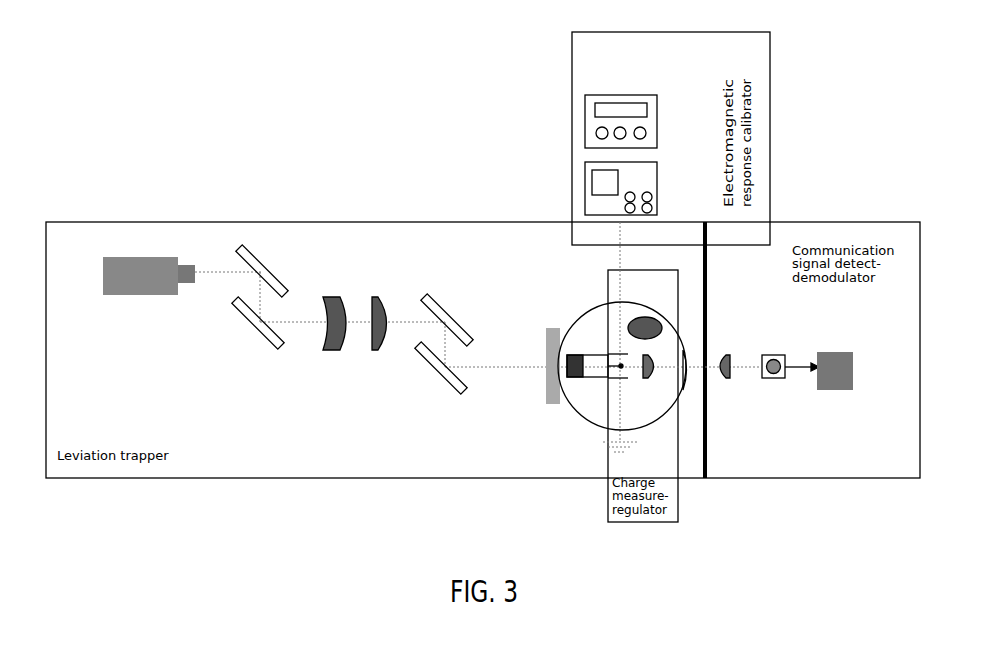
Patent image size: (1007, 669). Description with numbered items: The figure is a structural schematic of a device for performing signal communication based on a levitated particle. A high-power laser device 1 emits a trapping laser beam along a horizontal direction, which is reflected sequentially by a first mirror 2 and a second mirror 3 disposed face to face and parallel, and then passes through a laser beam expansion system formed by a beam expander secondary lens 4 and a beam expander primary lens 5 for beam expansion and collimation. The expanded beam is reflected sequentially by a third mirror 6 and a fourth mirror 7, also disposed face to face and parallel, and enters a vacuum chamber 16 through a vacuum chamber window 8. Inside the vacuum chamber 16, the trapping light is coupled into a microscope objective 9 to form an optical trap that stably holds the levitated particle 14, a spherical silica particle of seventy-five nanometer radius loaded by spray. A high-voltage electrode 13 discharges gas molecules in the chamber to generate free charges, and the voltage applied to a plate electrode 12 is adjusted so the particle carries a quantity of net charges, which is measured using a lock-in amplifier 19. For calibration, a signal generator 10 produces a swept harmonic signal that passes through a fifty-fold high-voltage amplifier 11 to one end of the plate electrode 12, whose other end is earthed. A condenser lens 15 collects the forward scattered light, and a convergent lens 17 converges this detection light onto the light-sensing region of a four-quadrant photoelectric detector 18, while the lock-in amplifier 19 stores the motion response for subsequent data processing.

The laser device 1 is at (131, 296).
The first mirror 2 is at (266, 268).
The second mirror 3 is at (240, 318).
The beam expander secondary lens 4 is at (335, 348).
The beam expander primary lens 5 is at (380, 348).
The third mirror 6 is at (440, 302).
The fourth mirror 7 is at (428, 370).
The vacuum chamber window 8 is at (547, 403).
The microscope objective 9 is at (588, 383).
The signal generator 10 is at (628, 95).
The high-voltage amplifier 11 is at (655, 178).
The plate electrode 12 is at (608, 354).
The high-voltage electrode 13 is at (620, 366).
The levitated particle 14 is at (684, 353).
The condenser lens 15 is at (658, 377).
The vacuum chamber 16 is at (684, 353).
The convergent lens 17 is at (725, 356).
The four-quadrant photoelectric detector 18 is at (785, 355).
The lock-in amplifier 19 is at (850, 357).